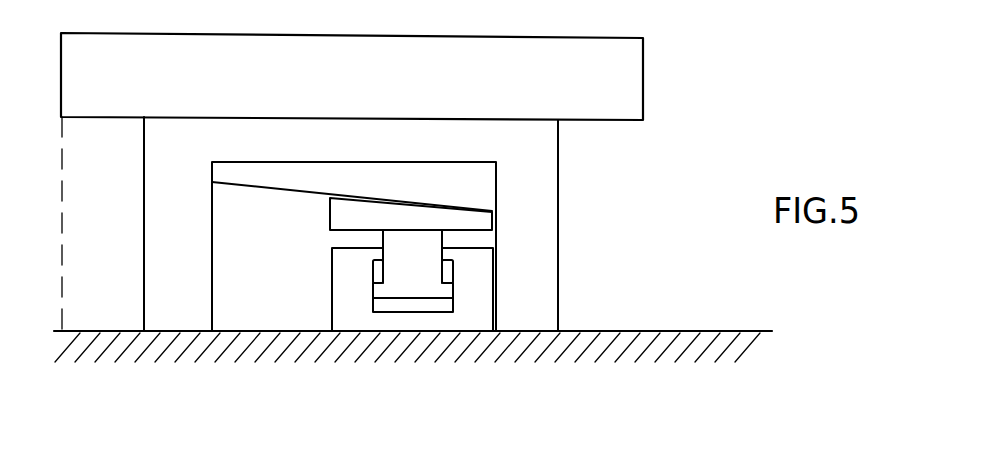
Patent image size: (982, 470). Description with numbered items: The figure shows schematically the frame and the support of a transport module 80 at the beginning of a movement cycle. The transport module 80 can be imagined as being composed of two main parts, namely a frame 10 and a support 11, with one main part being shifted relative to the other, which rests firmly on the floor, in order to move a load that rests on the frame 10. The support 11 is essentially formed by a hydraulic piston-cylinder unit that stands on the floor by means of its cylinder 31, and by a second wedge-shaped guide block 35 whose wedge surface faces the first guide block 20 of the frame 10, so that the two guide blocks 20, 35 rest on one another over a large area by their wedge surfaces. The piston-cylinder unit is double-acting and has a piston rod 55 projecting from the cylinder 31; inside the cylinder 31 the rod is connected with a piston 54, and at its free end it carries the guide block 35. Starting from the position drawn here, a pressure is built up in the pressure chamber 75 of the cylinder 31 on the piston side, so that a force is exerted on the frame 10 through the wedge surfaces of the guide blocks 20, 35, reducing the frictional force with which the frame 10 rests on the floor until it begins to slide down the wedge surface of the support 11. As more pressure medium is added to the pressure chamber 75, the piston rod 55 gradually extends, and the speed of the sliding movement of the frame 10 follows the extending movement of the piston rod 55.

The transport module 80 is at (662, 80).
The first guide block 20 is at (455, 181).
The frame 10 is at (530, 215).
The second wedge-shaped guide block 35 is at (358, 215).
The piston rod 55 is at (423, 240).
The cylinder 31 is at (473, 272).
The piston 54 is at (388, 290).
The pressure chamber 75 is at (422, 305).
The support 11 is at (513, 310).